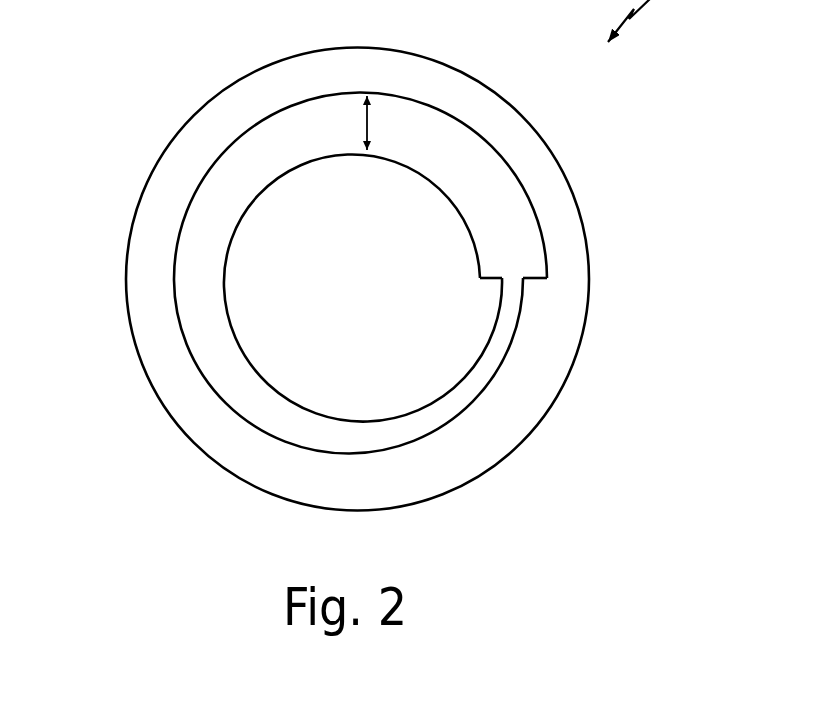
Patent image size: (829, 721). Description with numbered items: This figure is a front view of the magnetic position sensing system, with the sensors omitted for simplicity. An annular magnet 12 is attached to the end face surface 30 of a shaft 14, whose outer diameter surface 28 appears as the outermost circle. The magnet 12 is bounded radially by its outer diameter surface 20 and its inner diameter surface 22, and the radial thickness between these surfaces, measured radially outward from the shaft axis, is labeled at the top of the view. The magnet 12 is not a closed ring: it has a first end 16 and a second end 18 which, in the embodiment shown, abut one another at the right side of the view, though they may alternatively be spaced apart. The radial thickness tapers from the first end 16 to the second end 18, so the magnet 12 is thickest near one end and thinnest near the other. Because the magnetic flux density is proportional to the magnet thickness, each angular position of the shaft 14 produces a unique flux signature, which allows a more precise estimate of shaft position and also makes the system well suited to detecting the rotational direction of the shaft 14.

The annular magnet 12 is at (208, 400).
The shaft 14 is at (577, 173).
The first end 16 is at (553, 280).
The second end 18 is at (531, 291).
The outer diameter surface 20 is at (238, 135).
The inner diameter surface 22 is at (268, 194).
The outer diameter surface 28 is at (135, 213).
The end face surface 30 is at (460, 465).